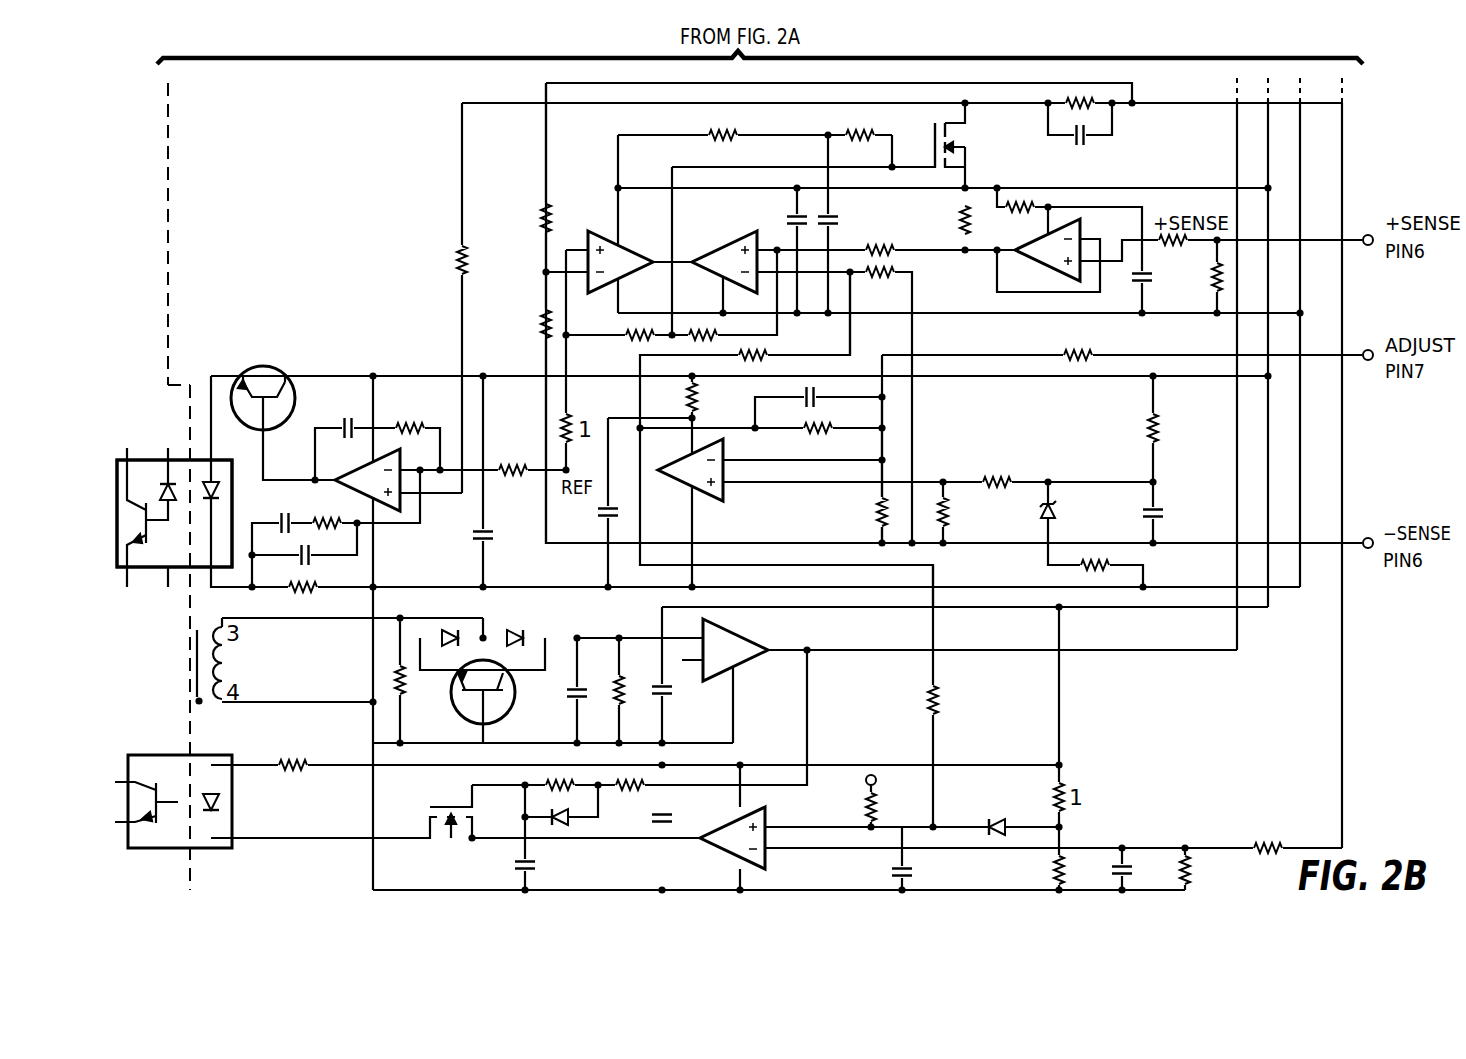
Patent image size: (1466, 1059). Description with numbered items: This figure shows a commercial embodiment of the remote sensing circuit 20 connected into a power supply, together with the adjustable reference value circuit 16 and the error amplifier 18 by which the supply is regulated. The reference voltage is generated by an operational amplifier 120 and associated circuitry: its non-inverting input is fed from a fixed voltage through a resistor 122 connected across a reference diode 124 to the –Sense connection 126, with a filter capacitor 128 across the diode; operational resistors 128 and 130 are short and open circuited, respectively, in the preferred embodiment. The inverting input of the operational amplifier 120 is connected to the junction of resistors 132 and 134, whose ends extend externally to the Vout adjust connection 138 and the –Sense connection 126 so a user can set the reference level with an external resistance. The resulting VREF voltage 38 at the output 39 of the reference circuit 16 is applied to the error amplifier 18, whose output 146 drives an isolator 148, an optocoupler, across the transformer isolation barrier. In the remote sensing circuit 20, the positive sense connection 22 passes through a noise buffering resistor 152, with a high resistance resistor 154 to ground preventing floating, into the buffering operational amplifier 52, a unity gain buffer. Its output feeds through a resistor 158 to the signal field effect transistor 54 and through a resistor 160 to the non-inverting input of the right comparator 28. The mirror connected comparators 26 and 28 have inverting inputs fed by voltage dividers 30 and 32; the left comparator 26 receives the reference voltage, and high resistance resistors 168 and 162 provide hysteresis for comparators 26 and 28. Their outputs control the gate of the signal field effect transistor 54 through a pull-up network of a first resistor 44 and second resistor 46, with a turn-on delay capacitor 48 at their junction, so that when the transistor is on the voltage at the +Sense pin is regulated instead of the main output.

The adjustable reference value circuit 16 is at (584, 556).
The error amplifier 18 is at (356, 496).
The remote sensing circuit 20 is at (444, 211).
The positive sense connection 22 is at (1370, 233).
The left comparator 26 is at (625, 254).
The right comparator 28 is at (722, 250).
The voltage divider 30 is at (545, 252).
The voltage divider 32 is at (852, 305).
The VREF voltage 38 is at (917, 562).
The reference voltage output 39 is at (933, 585).
The first resistor 44 is at (708, 130).
The second resistor 46 is at (845, 130).
The turn-on delay capacitor 48 is at (842, 222).
The buffering operational amplifier 52 is at (1090, 230).
The signal field effect transistor 54 is at (933, 130).
The operational amplifier 120 is at (728, 494).
The resistor 122 is at (1162, 424).
The reference diode 124 is at (1058, 513).
The –Sense connection 126 is at (1372, 550).
The filter capacitor 128 is at (1000, 476).
The operational resistor 130 is at (948, 516).
The resistor 132 is at (878, 508).
The resistor 134 is at (1068, 350).
The Vout adjust connection 138 is at (1372, 362).
The output of the error amplifier 146 is at (326, 370).
The isolator 148 is at (151, 452).
The resistor 152 is at (1175, 248).
The high resistance resistor 154 is at (1208, 290).
The resistor 158 is at (972, 240).
The resistor 160 is at (893, 245).
The high resistance resistor 162 is at (703, 330).
The high resistance resistor 168 is at (638, 344).